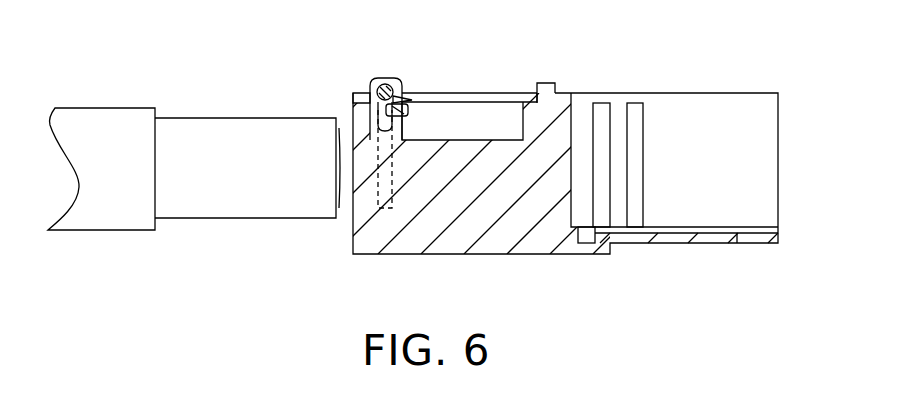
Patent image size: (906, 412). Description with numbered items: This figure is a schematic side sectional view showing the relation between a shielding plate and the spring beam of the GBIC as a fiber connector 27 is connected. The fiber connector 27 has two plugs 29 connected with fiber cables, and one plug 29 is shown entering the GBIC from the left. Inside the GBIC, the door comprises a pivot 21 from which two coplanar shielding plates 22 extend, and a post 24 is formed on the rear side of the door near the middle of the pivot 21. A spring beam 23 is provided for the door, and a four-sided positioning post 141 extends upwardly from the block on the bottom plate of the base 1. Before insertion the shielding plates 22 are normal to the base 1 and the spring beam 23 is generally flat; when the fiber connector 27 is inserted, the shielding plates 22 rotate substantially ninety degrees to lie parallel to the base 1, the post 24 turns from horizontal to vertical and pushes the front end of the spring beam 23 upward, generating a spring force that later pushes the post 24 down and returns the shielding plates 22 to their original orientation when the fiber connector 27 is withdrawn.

The base 1 is at (712, 246).
The pivot 21 is at (385, 86).
The shielding plates 22 is at (388, 152).
The spring beam 23 is at (458, 100).
The post 24 is at (403, 106).
The fiber connector 27 is at (114, 100).
The plug 29 is at (248, 143).
The positioning post 141 is at (545, 83).